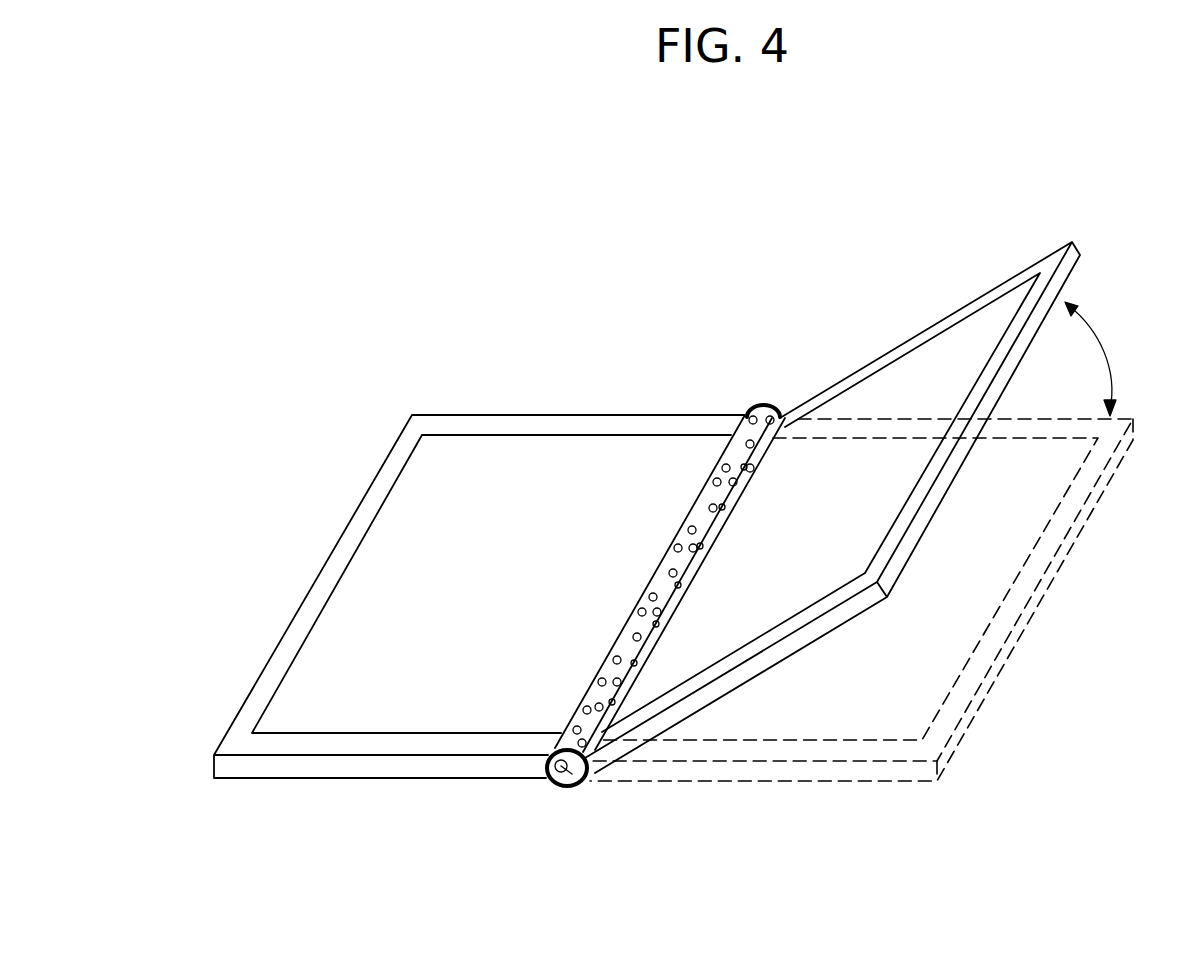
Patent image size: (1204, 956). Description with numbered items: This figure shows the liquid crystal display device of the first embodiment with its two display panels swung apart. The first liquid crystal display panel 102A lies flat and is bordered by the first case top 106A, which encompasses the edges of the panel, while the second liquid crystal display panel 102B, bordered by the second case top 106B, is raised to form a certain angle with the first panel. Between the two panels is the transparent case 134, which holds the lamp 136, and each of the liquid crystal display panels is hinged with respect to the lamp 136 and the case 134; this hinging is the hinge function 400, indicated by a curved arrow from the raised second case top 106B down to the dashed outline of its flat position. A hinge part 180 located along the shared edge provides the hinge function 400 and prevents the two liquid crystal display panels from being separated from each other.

The first case top 106A is at (445, 425).
The first liquid crystal display panel 102A is at (593, 477).
The second case top 106B is at (1053, 252).
The second liquid crystal display panel 102B is at (917, 395).
The hinge part 180 is at (762, 403).
The lamp 136 is at (567, 788).
The transparent case 134 is at (557, 771).
The hinge function 400 is at (1107, 343).